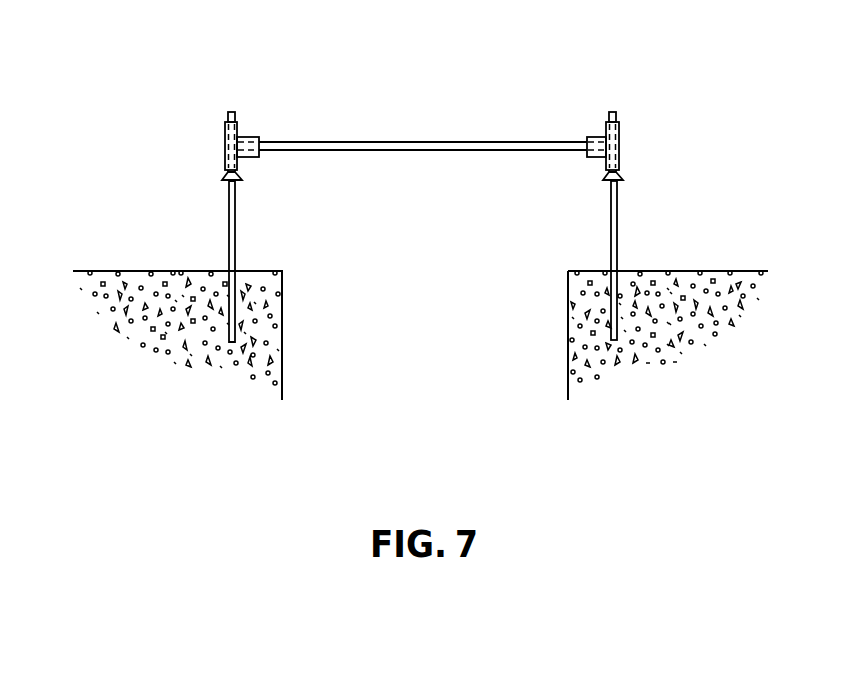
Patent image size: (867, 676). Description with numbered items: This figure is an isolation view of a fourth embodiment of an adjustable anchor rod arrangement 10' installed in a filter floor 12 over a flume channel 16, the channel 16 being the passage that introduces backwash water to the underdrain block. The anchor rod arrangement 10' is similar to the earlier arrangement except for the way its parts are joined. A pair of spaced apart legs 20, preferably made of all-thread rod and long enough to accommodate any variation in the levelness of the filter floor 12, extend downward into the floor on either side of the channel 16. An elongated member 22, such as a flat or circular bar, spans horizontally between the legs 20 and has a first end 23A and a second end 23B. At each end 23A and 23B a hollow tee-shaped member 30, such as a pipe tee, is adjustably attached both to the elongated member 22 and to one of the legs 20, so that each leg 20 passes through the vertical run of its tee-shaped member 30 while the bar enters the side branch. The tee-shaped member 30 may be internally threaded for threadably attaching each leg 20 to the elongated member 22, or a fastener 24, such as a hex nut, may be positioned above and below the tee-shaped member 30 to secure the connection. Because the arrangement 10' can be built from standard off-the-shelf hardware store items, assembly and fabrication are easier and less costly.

The anchor rod arrangement 10' is at (137, 194).
The filter floor 12 is at (257, 271).
The channel 16 is at (418, 362).
The legs 20 is at (618, 229).
The elongated member 22 is at (403, 142).
The first end 23A is at (260, 140).
The second end 23B is at (587, 140).
The fastener 24 is at (620, 176).
The tee-shaped member 30 is at (226, 150).